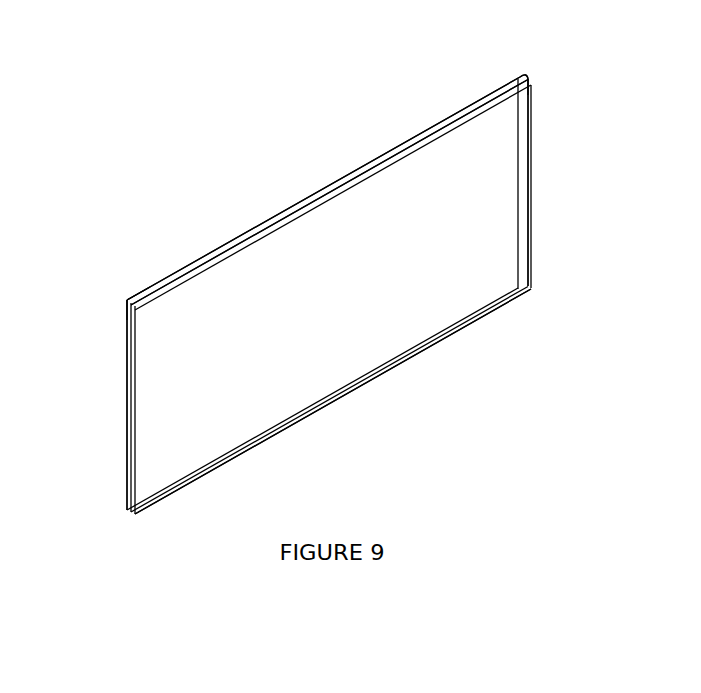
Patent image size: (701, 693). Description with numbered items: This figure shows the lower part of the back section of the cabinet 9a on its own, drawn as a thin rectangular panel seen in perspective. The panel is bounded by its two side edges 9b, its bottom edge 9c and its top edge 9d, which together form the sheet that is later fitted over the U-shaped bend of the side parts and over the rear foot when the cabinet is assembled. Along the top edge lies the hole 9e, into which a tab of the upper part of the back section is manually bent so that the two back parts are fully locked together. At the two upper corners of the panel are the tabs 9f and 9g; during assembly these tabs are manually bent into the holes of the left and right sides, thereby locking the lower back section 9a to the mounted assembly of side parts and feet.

The lower part of the back section of the cabinet 9a is at (262, 270).
The side edge 9b is at (528, 202).
The bottom edge 9c is at (358, 391).
The top edge line 9d is at (181, 268).
The hole 9e is at (323, 190).
The tab 9f is at (129, 309).
The tab 9g is at (531, 87).